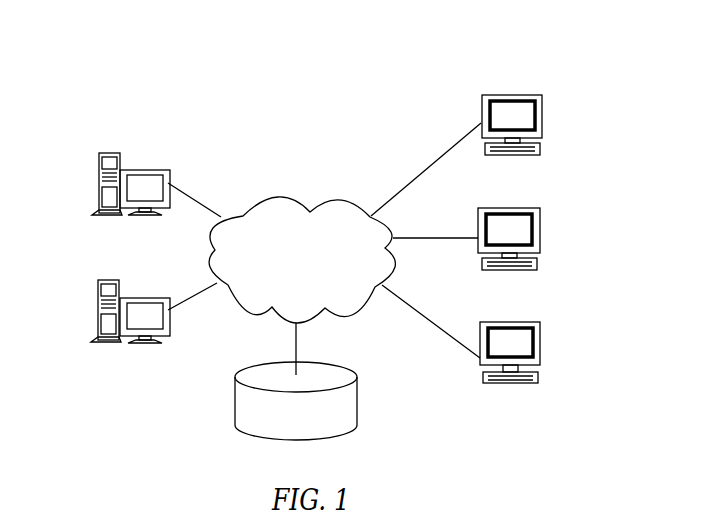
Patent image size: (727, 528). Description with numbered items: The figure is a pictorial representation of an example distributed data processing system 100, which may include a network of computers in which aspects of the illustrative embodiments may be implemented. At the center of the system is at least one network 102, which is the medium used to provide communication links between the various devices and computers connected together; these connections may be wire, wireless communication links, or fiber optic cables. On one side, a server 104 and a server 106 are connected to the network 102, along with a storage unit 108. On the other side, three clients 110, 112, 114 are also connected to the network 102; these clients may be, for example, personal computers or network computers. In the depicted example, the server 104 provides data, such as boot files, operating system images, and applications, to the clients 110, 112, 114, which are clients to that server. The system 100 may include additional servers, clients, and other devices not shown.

The distributed data processing system 100 is at (360, 133).
The network 102 is at (287, 196).
The server 104 is at (98, 186).
The server 106 is at (98, 313).
The storage unit 108 is at (232, 400).
The client 110 is at (542, 122).
The client 112 is at (540, 240).
The client 114 is at (540, 350).